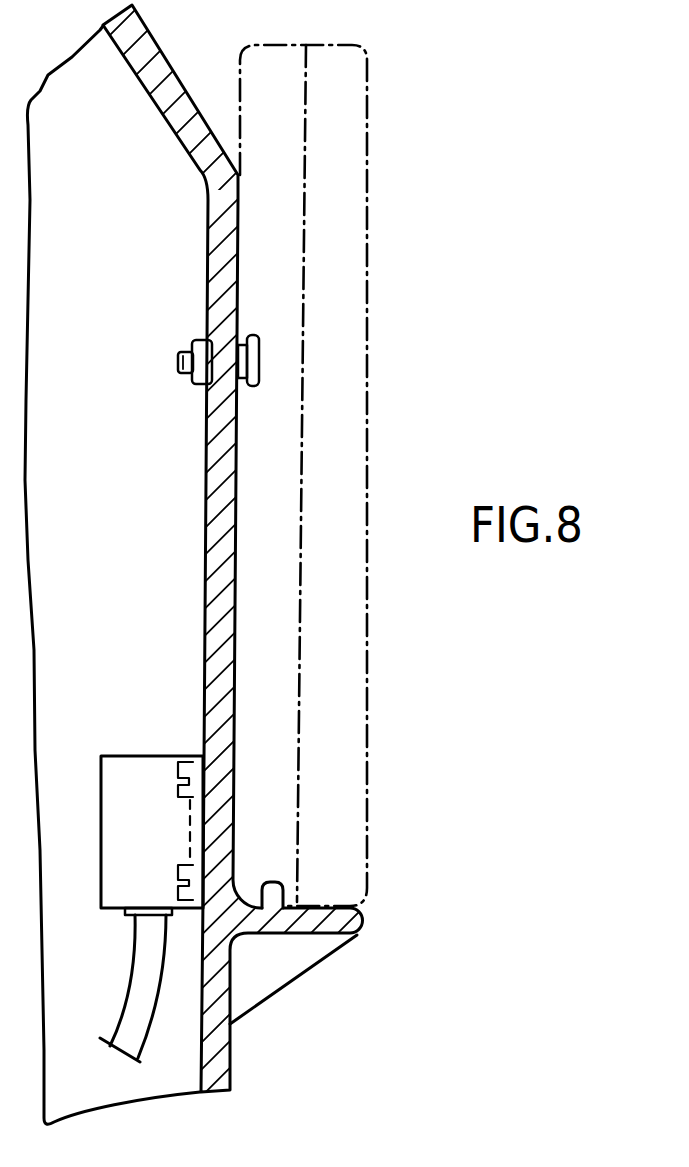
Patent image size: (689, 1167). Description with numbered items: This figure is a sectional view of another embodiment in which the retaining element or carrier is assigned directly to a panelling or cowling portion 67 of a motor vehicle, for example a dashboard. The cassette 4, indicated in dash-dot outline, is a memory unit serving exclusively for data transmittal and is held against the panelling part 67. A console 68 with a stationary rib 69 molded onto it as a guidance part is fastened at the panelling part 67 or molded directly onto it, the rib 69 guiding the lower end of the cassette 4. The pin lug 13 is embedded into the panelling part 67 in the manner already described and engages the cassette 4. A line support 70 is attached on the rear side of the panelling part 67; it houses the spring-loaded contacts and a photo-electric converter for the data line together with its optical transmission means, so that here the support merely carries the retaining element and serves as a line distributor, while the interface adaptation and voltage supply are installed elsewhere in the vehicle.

The cassette 4 is at (388, 183).
The pin lug 13 is at (259, 355).
The panelling or cowling portion 67 is at (213, 482).
The console 68 is at (287, 956).
The stationary rib 69 is at (266, 884).
The line support 70 is at (126, 773).